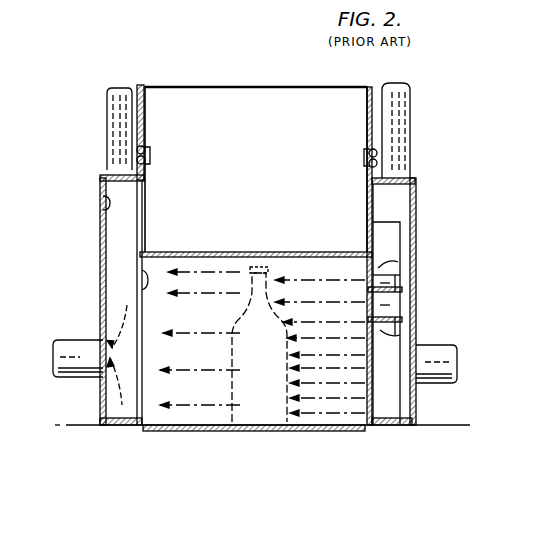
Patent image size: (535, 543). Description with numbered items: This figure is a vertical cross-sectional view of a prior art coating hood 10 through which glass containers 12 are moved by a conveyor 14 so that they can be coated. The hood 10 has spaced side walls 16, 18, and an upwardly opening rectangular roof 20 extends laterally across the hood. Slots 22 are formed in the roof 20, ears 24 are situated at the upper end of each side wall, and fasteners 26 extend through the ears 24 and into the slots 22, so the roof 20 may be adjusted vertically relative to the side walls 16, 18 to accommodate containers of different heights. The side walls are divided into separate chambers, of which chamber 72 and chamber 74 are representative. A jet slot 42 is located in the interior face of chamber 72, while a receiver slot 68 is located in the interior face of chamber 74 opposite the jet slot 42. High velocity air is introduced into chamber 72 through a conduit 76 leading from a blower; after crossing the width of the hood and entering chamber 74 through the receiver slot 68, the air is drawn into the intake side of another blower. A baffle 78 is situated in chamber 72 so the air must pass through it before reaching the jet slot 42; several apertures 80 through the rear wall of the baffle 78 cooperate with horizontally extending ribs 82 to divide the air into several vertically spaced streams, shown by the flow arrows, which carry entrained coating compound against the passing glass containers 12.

The coating hood 10 is at (88, 230).
The glass containers 12 is at (262, 268).
The conveyor 14 is at (333, 430).
The side wall 16 is at (414, 292).
The side wall 18 is at (100, 278).
The roof 20 is at (227, 103).
The slots 22 is at (133, 112).
The ears 24 is at (136, 170).
The fasteners 26 is at (148, 146).
The jet slot 42 is at (375, 307).
The receiver slot 68 is at (142, 275).
The chamber 72 is at (416, 196).
The chamber 74 is at (103, 204).
The conduit 76 is at (400, 130).
The baffle 78 is at (395, 236).
The apertures 80 is at (400, 283).
The ribs 82 is at (398, 262).